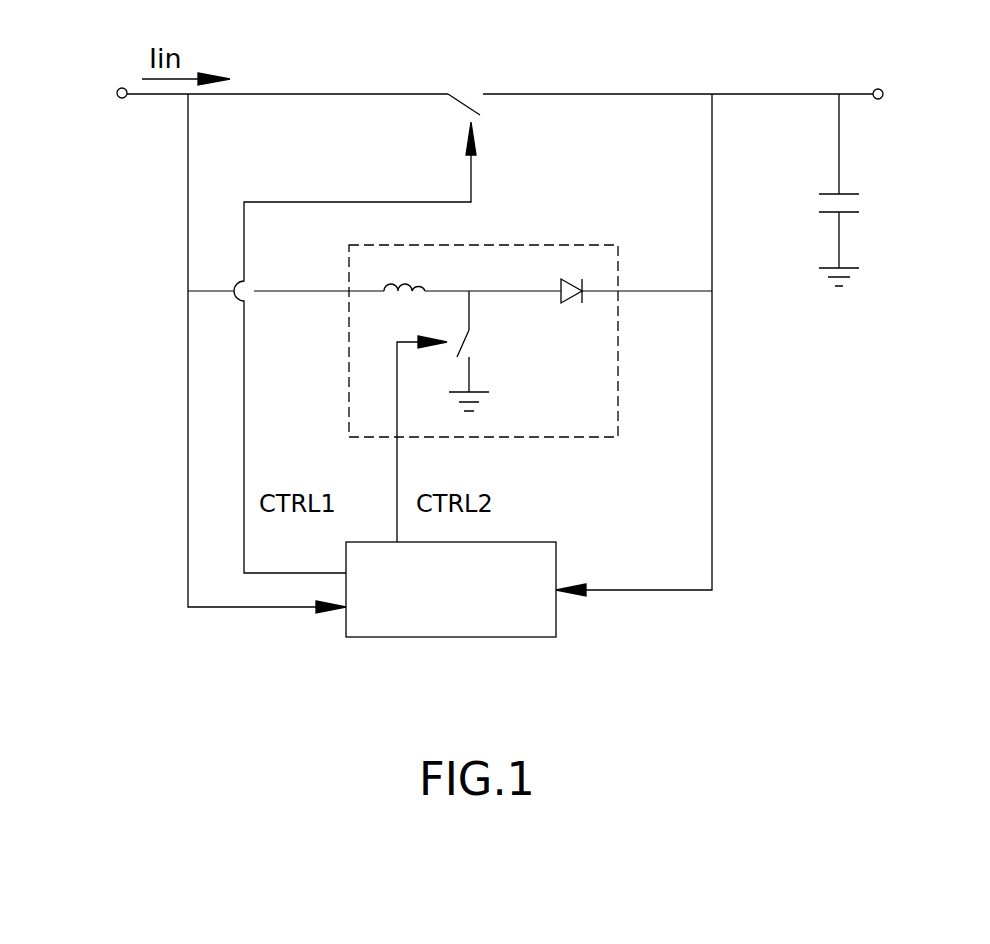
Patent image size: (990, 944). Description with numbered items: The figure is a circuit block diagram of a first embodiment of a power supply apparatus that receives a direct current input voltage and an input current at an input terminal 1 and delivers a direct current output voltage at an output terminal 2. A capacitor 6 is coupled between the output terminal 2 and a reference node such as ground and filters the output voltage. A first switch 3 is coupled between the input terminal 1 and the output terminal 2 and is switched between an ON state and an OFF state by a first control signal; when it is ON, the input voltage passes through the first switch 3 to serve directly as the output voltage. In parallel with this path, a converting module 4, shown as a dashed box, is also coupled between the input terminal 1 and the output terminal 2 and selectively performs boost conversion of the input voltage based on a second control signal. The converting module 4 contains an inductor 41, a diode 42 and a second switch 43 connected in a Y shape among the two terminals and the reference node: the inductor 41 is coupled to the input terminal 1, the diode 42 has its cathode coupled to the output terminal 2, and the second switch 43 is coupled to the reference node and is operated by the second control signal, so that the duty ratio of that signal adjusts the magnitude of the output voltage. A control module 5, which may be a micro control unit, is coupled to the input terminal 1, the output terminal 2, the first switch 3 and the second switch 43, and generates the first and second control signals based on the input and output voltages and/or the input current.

The input terminal 1 is at (118, 99).
The output terminal 2 is at (880, 100).
The first switch 3 is at (466, 100).
The converting module 4 is at (486, 244).
The control module 5 is at (452, 640).
The capacitor 6 is at (850, 212).
The inductor 41 is at (397, 296).
The diode 42 is at (572, 297).
The second switch 43 is at (467, 344).